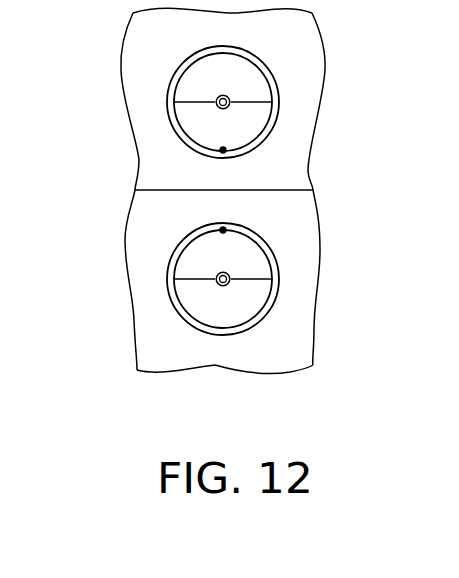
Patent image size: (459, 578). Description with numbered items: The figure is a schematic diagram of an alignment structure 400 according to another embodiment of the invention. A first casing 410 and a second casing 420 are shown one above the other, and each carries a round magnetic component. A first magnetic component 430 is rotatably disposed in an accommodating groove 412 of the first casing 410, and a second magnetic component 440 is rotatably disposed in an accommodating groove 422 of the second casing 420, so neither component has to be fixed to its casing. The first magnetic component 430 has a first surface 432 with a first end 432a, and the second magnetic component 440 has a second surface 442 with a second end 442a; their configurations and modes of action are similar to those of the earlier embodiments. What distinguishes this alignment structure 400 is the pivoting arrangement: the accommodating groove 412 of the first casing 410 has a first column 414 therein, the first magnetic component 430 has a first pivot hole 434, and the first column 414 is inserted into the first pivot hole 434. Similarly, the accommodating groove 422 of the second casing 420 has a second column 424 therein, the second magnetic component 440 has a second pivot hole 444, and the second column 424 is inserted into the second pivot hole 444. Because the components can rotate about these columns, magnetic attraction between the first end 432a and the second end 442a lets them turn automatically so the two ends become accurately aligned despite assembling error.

The alignment structure 400 is at (435, 439).
The first casing 410 is at (302, 345).
The accommodating groove 412 is at (191, 327).
The first column 414 is at (229, 284).
The second casing 420 is at (303, 35).
The accommodating groove 422 is at (185, 55).
The second column 424 is at (229, 107).
The first magnetic component 430 is at (192, 303).
The first surface 432 is at (178, 252).
The first end 432a is at (223, 230).
The first pivot hole 434 is at (232, 270).
The second magnetic component 440 is at (192, 75).
The second surface 442 is at (180, 125).
The second end 442a is at (223, 150).
The second pivot hole 444 is at (232, 93).